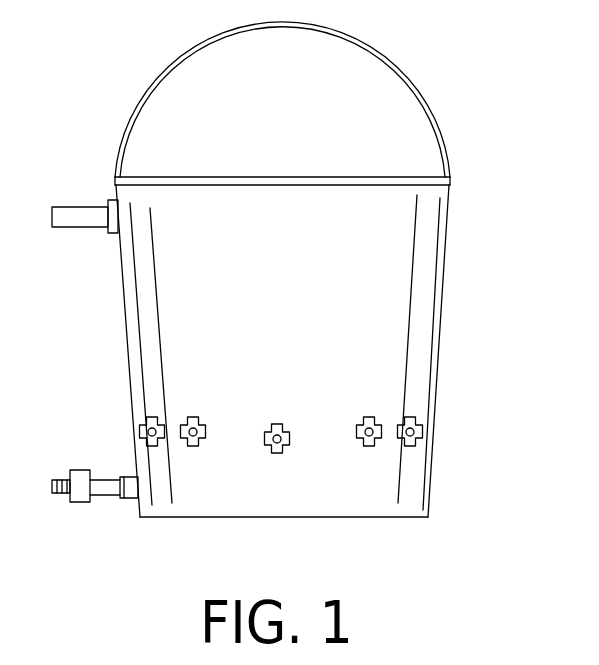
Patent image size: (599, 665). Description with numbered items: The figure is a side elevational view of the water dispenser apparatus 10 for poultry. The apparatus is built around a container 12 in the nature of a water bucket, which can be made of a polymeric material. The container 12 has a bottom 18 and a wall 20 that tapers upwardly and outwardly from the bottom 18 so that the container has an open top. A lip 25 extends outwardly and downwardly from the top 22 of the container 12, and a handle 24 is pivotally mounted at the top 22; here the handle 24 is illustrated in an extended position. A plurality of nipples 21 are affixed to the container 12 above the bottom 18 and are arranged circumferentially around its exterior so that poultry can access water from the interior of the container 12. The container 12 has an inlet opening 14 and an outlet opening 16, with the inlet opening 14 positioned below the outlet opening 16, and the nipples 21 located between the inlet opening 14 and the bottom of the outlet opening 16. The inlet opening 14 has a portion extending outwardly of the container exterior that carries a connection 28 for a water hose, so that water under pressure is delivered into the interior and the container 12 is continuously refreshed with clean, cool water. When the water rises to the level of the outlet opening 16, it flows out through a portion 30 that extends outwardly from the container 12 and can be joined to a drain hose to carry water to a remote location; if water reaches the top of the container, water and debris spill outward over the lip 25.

The water dispenser apparatus 10 is at (500, 278).
The container 12 is at (435, 403).
The inlet opening 14 is at (127, 477).
The outlet opening 16 is at (110, 233).
The bottom 18 is at (377, 518).
The wall 20 is at (438, 343).
The nipples 21 is at (203, 419).
The top 22 is at (298, 177).
The handle 24 is at (420, 93).
The lip 25 is at (262, 181).
The connection 28 is at (63, 495).
The portion 30 is at (87, 207).